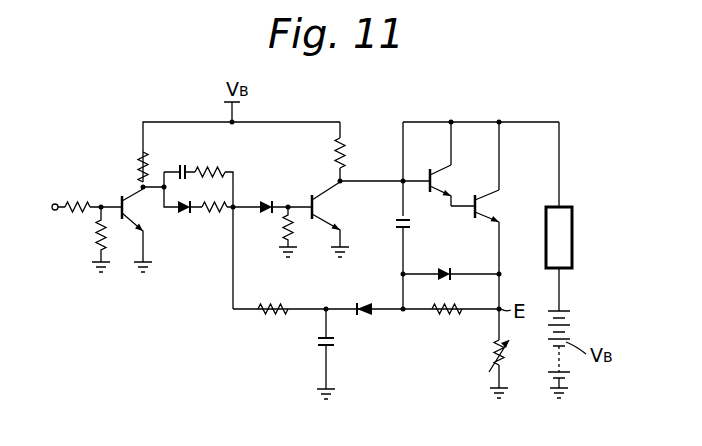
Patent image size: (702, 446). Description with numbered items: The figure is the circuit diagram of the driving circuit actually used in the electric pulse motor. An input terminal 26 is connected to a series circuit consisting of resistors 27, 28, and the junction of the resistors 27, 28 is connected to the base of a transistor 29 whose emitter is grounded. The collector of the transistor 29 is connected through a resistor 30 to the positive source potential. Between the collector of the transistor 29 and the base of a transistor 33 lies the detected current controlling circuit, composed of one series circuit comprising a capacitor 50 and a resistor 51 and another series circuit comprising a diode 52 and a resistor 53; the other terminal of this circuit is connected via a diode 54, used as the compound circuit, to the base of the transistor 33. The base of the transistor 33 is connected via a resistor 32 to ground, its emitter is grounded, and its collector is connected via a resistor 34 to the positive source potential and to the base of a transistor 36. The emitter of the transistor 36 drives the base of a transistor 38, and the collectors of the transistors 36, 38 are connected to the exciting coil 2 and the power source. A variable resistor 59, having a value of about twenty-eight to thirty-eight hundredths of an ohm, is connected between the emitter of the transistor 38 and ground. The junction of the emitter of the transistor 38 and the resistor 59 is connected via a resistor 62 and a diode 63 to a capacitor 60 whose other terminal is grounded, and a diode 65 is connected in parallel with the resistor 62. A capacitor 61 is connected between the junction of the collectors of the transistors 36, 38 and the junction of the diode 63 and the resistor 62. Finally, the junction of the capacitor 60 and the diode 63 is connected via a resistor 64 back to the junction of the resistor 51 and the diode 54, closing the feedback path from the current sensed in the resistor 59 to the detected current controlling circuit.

The input terminal 26 is at (54, 203).
The resistor 27 is at (89, 204).
The resistor 28 is at (100, 239).
The transistor 29 is at (133, 210).
The resistor 30 is at (143, 156).
The capacitor 50 is at (183, 164).
The resistor 51 is at (223, 170).
The diode 52 is at (184, 216).
The resistor 53 is at (214, 215).
The diode 54 is at (263, 200).
The resistor 32 is at (287, 241).
The transistor 33 is at (325, 207).
The resistor 34 is at (346, 159).
The transistor 36 is at (440, 174).
The transistor 38 is at (488, 206).
The capacitor 61 is at (410, 226).
The diode 65 is at (447, 270).
The exciting coil 2 is at (573, 240).
The resistor 62 is at (435, 312).
The diode 63 is at (369, 315).
The resistor 64 is at (274, 314).
The capacitor 60 is at (334, 342).
The variable resistor 59 is at (495, 361).